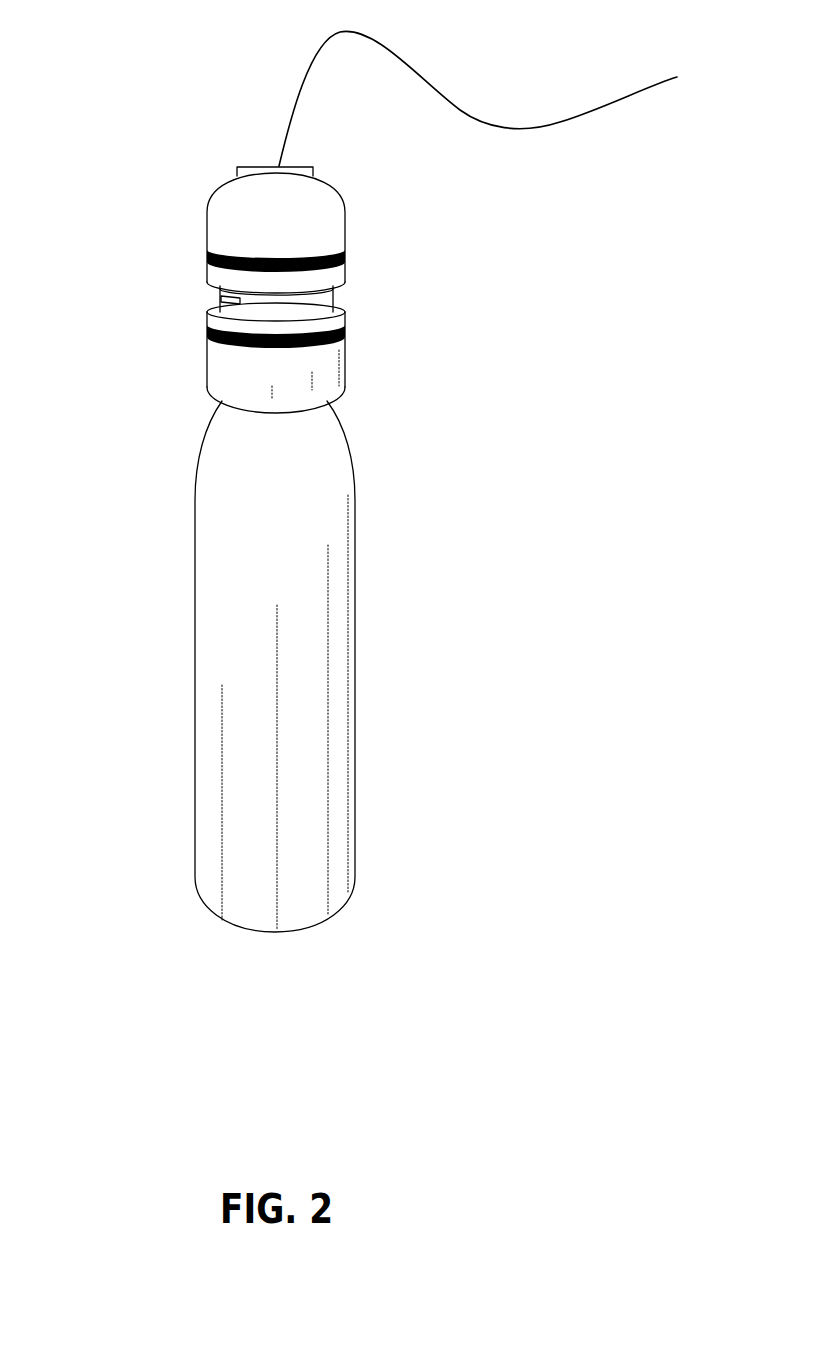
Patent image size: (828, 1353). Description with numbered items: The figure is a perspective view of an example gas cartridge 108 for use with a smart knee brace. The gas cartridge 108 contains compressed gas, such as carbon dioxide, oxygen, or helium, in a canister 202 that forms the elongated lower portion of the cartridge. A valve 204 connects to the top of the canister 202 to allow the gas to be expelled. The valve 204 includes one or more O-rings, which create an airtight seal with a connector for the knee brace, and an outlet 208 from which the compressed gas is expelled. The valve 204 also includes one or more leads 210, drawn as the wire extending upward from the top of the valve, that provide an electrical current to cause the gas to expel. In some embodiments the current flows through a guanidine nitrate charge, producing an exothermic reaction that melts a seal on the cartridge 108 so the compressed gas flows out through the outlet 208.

The gas cartridge 108 is at (192, 67).
The canister 202 is at (323, 518).
The valve 204 is at (223, 375).
The outlet 208 is at (224, 302).
The leads 210 is at (643, 112).